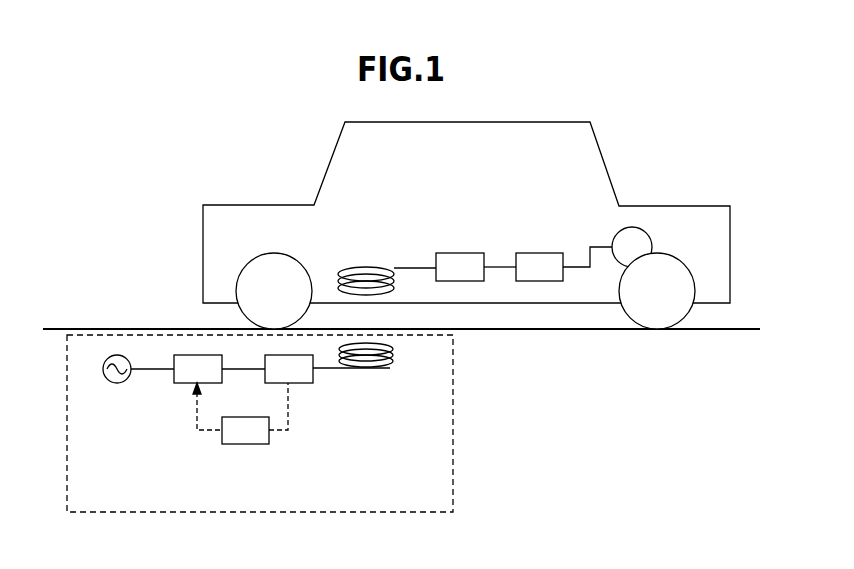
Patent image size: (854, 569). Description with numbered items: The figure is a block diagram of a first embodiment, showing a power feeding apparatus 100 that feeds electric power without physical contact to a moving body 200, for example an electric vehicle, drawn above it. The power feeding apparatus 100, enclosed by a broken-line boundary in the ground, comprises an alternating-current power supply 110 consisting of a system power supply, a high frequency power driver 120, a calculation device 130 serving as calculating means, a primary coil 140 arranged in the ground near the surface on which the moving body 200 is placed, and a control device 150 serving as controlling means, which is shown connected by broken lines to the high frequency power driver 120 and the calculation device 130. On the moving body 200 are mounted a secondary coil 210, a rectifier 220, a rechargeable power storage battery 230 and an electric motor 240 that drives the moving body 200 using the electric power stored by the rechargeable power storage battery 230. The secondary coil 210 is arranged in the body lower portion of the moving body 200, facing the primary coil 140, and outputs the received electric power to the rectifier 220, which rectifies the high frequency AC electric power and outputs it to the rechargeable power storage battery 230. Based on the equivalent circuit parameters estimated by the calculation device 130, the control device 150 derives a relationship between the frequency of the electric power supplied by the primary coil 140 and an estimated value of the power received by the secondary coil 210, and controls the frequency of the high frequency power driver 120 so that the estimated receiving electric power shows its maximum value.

The power feeding apparatus 100 is at (297, 513).
The alternating-current power supply 110 is at (117, 384).
The high frequency power driver 120 is at (182, 385).
The calculation device 130 is at (300, 384).
The primary coil 140 is at (393, 365).
The control device 150 is at (248, 445).
The moving body 200 is at (325, 165).
The secondary coil 210 is at (355, 262).
The rectifier 220 is at (456, 252).
The rechargeable power storage battery 230 is at (540, 252).
The electric motor 240 is at (634, 226).